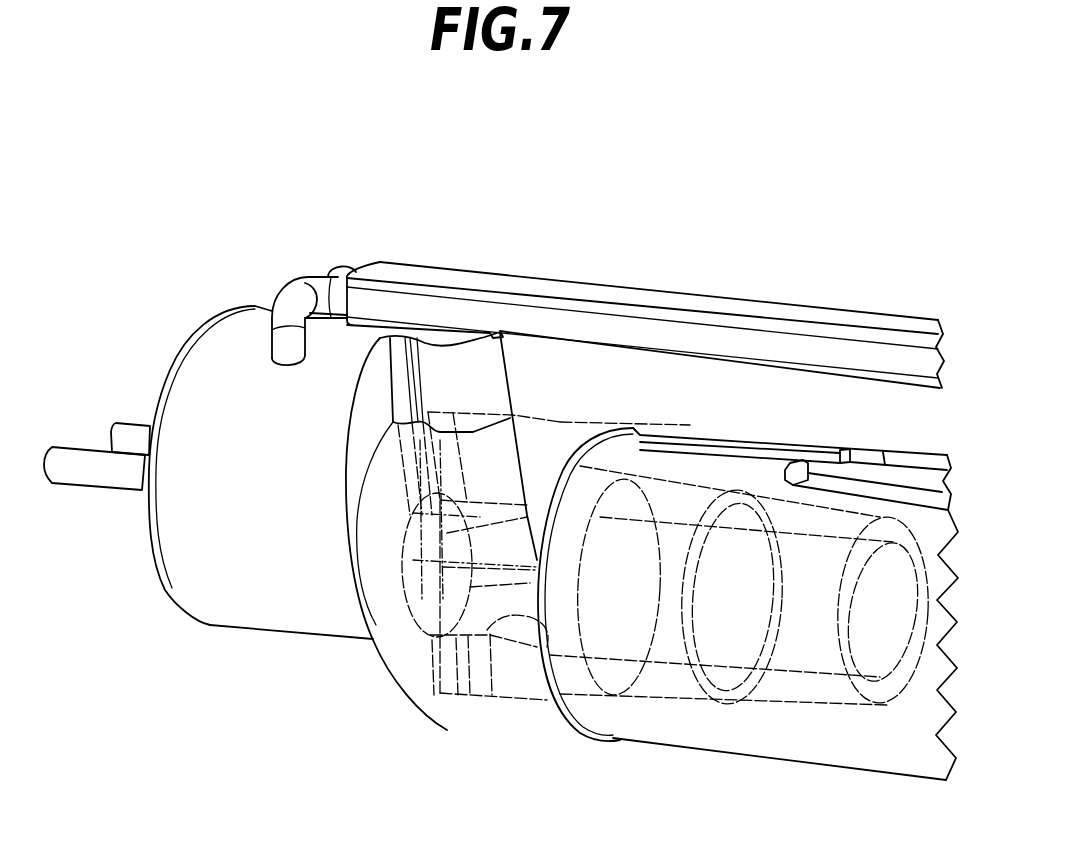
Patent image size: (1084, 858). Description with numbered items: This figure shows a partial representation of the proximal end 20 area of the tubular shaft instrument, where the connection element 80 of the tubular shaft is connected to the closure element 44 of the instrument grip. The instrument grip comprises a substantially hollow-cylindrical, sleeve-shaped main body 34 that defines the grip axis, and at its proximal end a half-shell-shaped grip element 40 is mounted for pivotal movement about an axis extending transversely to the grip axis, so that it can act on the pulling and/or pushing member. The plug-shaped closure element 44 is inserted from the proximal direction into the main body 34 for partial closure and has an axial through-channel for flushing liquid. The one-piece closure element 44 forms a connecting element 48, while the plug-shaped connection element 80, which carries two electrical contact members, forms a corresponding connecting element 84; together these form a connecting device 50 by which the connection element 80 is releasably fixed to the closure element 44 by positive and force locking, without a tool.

The proximal end 20 is at (273, 650).
The main body 34 is at (905, 490).
The grip element 40 is at (733, 740).
The closure element 44 is at (522, 717).
The connecting element 48 is at (460, 712).
The connecting device 50 is at (534, 390).
The connection element 80 is at (223, 597).
The connecting element 84 is at (320, 610).